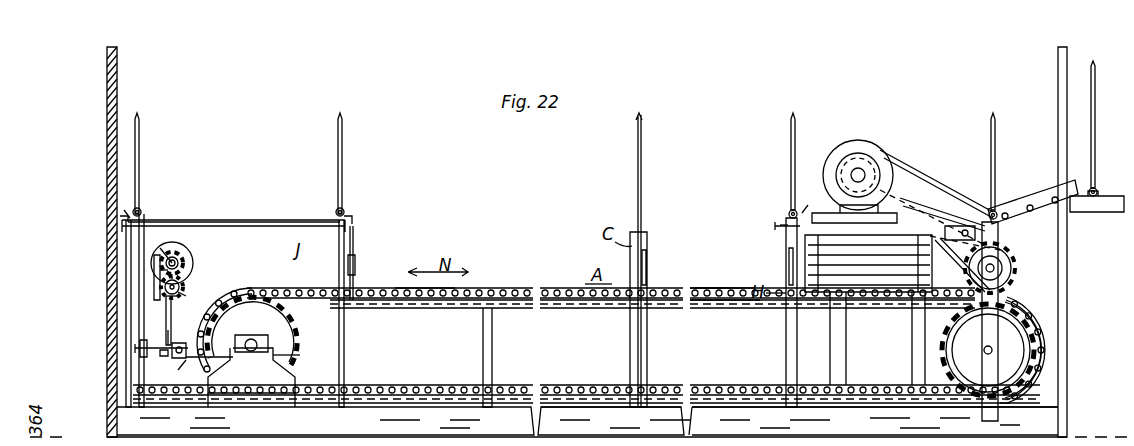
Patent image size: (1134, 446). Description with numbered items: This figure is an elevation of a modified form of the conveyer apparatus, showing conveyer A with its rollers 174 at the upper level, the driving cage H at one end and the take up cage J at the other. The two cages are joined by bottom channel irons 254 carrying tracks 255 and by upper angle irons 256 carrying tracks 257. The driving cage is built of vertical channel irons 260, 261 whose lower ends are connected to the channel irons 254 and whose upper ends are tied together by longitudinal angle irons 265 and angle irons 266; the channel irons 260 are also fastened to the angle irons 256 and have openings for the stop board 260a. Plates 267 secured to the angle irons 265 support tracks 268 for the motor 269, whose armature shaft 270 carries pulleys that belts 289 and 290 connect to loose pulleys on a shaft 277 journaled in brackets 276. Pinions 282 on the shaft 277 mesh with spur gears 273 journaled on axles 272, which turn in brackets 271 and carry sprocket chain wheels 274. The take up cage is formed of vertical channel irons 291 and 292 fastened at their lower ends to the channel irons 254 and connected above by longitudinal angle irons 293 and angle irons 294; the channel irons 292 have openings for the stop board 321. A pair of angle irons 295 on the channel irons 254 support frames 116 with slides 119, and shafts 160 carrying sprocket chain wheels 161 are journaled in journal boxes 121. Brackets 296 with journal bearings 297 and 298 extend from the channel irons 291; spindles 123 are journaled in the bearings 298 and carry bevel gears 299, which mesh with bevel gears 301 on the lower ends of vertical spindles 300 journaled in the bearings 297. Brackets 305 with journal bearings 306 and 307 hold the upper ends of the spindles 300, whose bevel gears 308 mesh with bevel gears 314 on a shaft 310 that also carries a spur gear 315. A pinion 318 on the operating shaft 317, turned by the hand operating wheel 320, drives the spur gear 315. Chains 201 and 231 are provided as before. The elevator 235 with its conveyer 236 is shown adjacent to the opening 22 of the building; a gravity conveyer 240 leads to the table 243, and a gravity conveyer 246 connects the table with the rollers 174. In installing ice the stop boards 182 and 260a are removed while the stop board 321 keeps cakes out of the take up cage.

The opening 22 is at (1058, 126).
The frames 116 is at (251, 370).
The slides 119 is at (300, 355).
The journal boxes 121 is at (258, 352).
The spindles 123 is at (221, 361).
The shafts 160 is at (251, 339).
The sprocket chain wheels 161 is at (298, 339).
The rollers 174 is at (495, 288).
The stop board 182 is at (648, 253).
The chains 201 is at (139, 158).
The chains 231 is at (342, 158).
The platform or elevator 235 is at (1095, 208).
The conveyer 236 is at (1098, 188).
The gravity conveyer 240 is at (1037, 192).
The table 243 is at (780, 229).
The gravity conveyer 246 is at (845, 302).
The bottom channel irons 254 is at (748, 405).
The tracks 255 is at (593, 402).
The upper angle irons 256 is at (730, 302).
The tracks 257 is at (728, 304).
The vertical channel irons 260 is at (786, 360).
The stop board 260a is at (788, 262).
The vertical channel irons 261 is at (984, 412).
The longitudinal angle irons 265 is at (868, 257).
The angle irons 266 is at (780, 225).
The plates 267 is at (812, 212).
The tracks 268 is at (848, 210).
The motor 269 is at (858, 140).
The armature shaft 270 is at (850, 176).
The brackets 271 is at (985, 336).
The axles 272 is at (992, 346).
The spur gear 273 is at (1008, 406).
The sprocket chain wheel 274 is at (950, 360).
The brackets 276 is at (1000, 270).
The shaft 277 is at (1005, 260).
The pinions 282 is at (1010, 288).
The belt 289 is at (912, 175).
The belt 290 is at (935, 208).
The vertical channel irons 291 is at (138, 359).
The vertical channel irons 292 is at (345, 352).
The longitudinal angle irons 293 is at (298, 221).
The angle irons 294 is at (126, 217).
The angle irons 295 is at (208, 403).
The brackets 296 is at (142, 346).
The journal bearings 297 is at (172, 344).
The journal bearings 298 is at (180, 358).
The bevel gears 299 is at (184, 374).
The vertical spindles 300 is at (167, 319).
The bevel gears 301 is at (171, 358).
The brackets 305 is at (154, 287).
The journal bearings 306 is at (174, 299).
The journal bearings 307 is at (183, 268).
The bevel gears 308 is at (191, 296).
The shaft 310 is at (185, 282).
The bevel gears 314 is at (160, 276).
The spur gear 315 is at (186, 290).
The operating shafts 317 is at (178, 258).
The pinion 318 is at (185, 255).
The hand operating wheel 320 is at (164, 242).
The stop board 321 is at (354, 260).